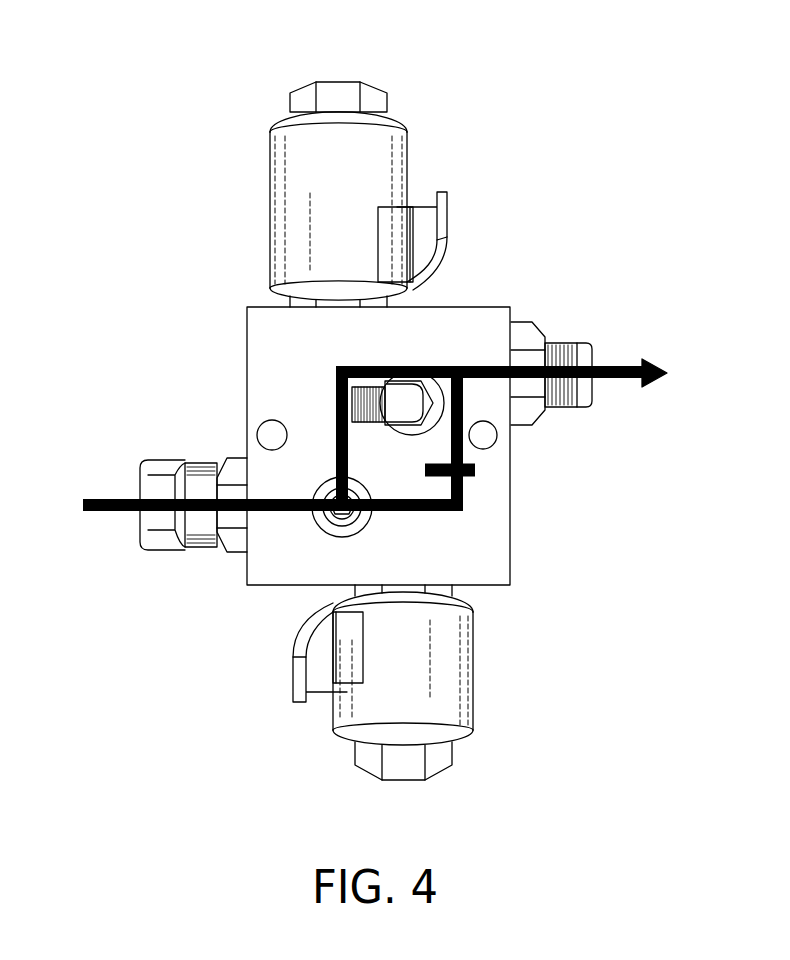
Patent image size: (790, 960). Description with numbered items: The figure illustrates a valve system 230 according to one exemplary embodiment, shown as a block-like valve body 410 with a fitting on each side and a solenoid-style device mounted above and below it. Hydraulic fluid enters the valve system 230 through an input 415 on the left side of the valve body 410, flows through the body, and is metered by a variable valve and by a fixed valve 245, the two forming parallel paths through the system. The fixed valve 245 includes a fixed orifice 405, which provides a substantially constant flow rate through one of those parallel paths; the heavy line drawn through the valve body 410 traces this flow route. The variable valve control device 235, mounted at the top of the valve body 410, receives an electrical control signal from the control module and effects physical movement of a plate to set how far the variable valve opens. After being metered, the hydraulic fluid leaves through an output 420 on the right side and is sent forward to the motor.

The valve system 230 is at (488, 110).
The variable valve control device 235 is at (340, 127).
The fixed valve 245 is at (437, 762).
The fixed orifice 405 is at (467, 478).
The valve body 410 is at (267, 322).
The input 415 is at (155, 488).
The output 420 is at (565, 407).